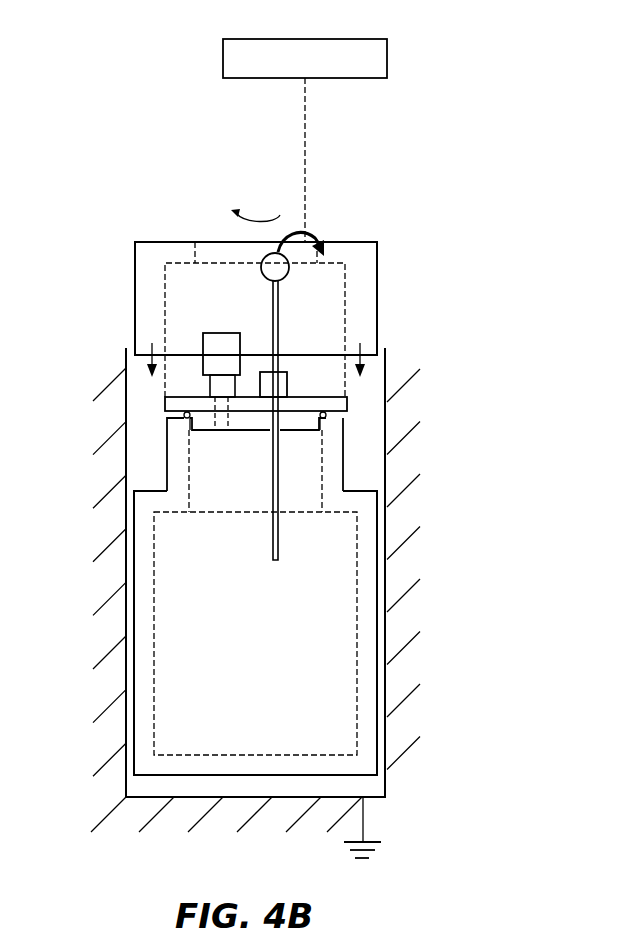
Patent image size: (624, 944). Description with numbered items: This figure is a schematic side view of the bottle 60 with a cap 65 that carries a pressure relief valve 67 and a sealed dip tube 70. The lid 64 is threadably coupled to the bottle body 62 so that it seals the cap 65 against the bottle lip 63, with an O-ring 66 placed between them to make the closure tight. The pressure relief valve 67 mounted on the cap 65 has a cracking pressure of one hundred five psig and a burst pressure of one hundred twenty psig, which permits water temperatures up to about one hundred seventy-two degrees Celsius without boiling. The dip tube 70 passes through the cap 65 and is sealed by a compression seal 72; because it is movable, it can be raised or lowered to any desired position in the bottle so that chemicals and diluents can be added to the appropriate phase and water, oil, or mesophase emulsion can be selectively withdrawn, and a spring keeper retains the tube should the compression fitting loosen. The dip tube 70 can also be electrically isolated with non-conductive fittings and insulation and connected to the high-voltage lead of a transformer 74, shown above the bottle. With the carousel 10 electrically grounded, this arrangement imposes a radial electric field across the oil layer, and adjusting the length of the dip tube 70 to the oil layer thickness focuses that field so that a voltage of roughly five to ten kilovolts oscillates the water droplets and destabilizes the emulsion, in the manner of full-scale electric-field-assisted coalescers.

The carousel 10 is at (469, 731).
The bottle 60 is at (182, 94).
The bottle body 62 is at (134, 600).
The bottle lip 63 is at (178, 446).
The lid 64 is at (135, 308).
The cap 65 is at (343, 397).
The O-ring 66 is at (184, 415).
The pressure relief valve 67 is at (225, 333).
The dip tube 70 is at (271, 535).
The compression seal 72 is at (287, 388).
The transformer 74 is at (388, 60).